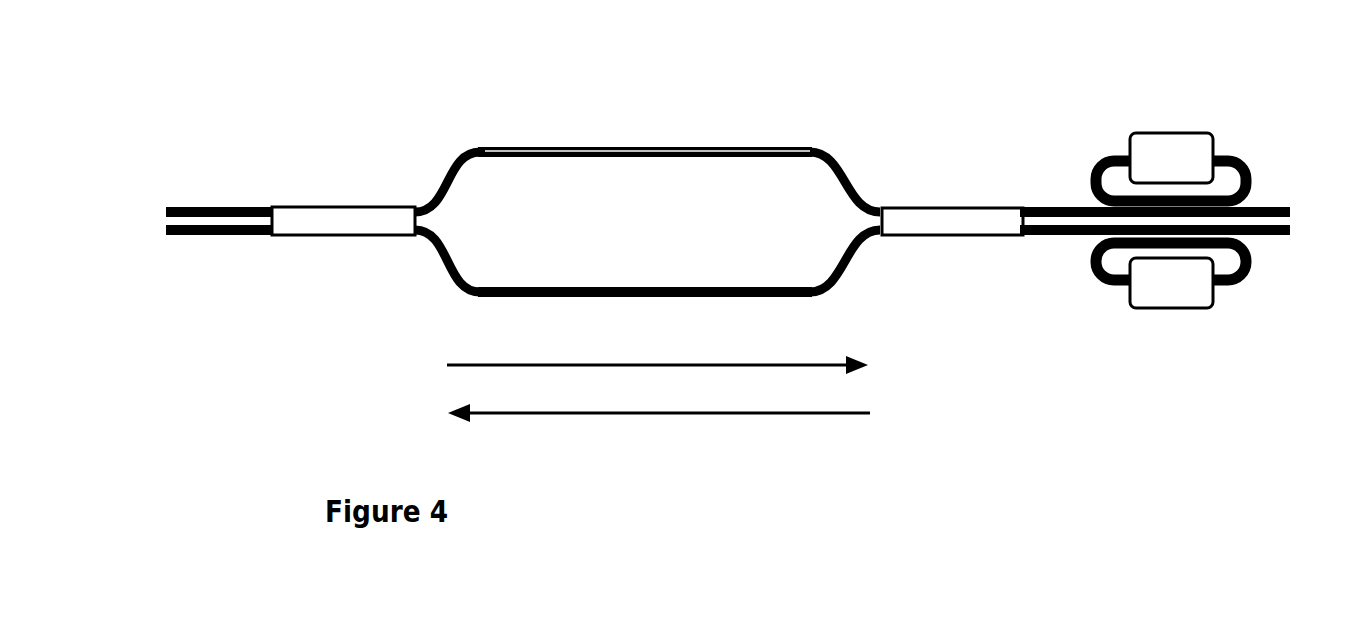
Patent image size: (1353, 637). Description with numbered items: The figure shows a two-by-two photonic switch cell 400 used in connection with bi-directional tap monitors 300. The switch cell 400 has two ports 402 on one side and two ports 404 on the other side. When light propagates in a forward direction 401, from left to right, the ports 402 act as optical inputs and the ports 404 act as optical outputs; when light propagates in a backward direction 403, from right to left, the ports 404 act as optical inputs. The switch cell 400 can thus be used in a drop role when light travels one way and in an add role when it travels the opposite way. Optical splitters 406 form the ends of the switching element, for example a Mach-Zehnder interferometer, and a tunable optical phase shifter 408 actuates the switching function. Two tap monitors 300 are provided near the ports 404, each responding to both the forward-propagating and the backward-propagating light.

The 2×2 photonic switch cell 400 is at (1002, 33).
The forward direction 401 is at (644, 364).
The ports 402 is at (187, 237).
The backward direction 403 is at (657, 415).
The ports 404 is at (1268, 238).
The optical splitter 406 is at (345, 207).
The tunable optical phase shifter 408 is at (656, 152).
The bi-directional tap monitor 300 is at (1171, 220).